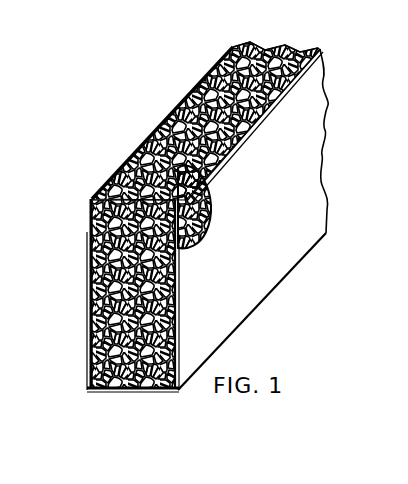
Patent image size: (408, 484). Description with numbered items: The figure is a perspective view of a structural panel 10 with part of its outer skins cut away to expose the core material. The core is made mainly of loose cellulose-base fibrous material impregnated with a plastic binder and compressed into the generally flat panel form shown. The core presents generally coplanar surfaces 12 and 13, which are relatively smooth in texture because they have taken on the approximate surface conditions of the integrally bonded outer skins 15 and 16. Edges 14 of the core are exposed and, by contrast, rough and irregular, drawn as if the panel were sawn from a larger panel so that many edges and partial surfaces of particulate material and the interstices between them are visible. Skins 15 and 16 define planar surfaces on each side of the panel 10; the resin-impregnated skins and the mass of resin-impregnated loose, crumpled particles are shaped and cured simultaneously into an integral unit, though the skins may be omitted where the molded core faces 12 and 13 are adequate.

The structural panel 10 is at (134, 146).
The core surface 12 is at (89, 231).
The core surface 13 is at (212, 210).
The edges 14 is at (193, 90).
The outer skin 15 is at (87, 297).
The outer skin 16 is at (238, 293).